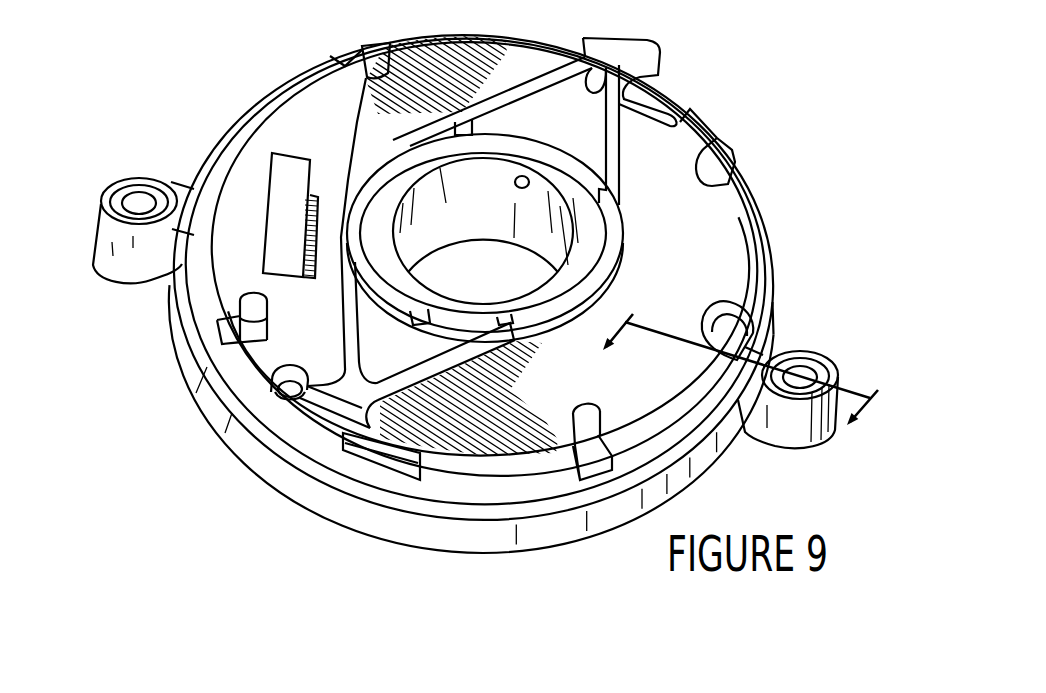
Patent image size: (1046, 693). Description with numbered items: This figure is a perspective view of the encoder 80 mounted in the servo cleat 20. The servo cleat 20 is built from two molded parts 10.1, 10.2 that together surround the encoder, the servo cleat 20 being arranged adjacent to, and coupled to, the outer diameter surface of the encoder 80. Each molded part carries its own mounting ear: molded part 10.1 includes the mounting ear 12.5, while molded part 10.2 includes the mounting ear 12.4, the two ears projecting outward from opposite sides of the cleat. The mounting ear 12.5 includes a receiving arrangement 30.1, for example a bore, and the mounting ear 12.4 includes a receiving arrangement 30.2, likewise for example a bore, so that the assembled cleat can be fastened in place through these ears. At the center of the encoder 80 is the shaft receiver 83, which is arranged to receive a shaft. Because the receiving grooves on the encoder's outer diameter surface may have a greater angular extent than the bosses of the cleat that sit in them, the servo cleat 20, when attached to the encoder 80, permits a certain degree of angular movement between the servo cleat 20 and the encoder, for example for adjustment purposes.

The molded part 10.1 is at (813, 284).
The molded part 10.2 is at (270, 518).
The mounting ear 12.4 is at (90, 182).
The mounting ear 12.5 is at (832, 458).
The servo cleat 20 is at (140, 375).
The receiving arrangement 30.1 is at (820, 350).
The receiving arrangement 30.2 is at (139, 212).
The encoder 80 is at (181, 90).
The shaft receiver 83 is at (491, 212).